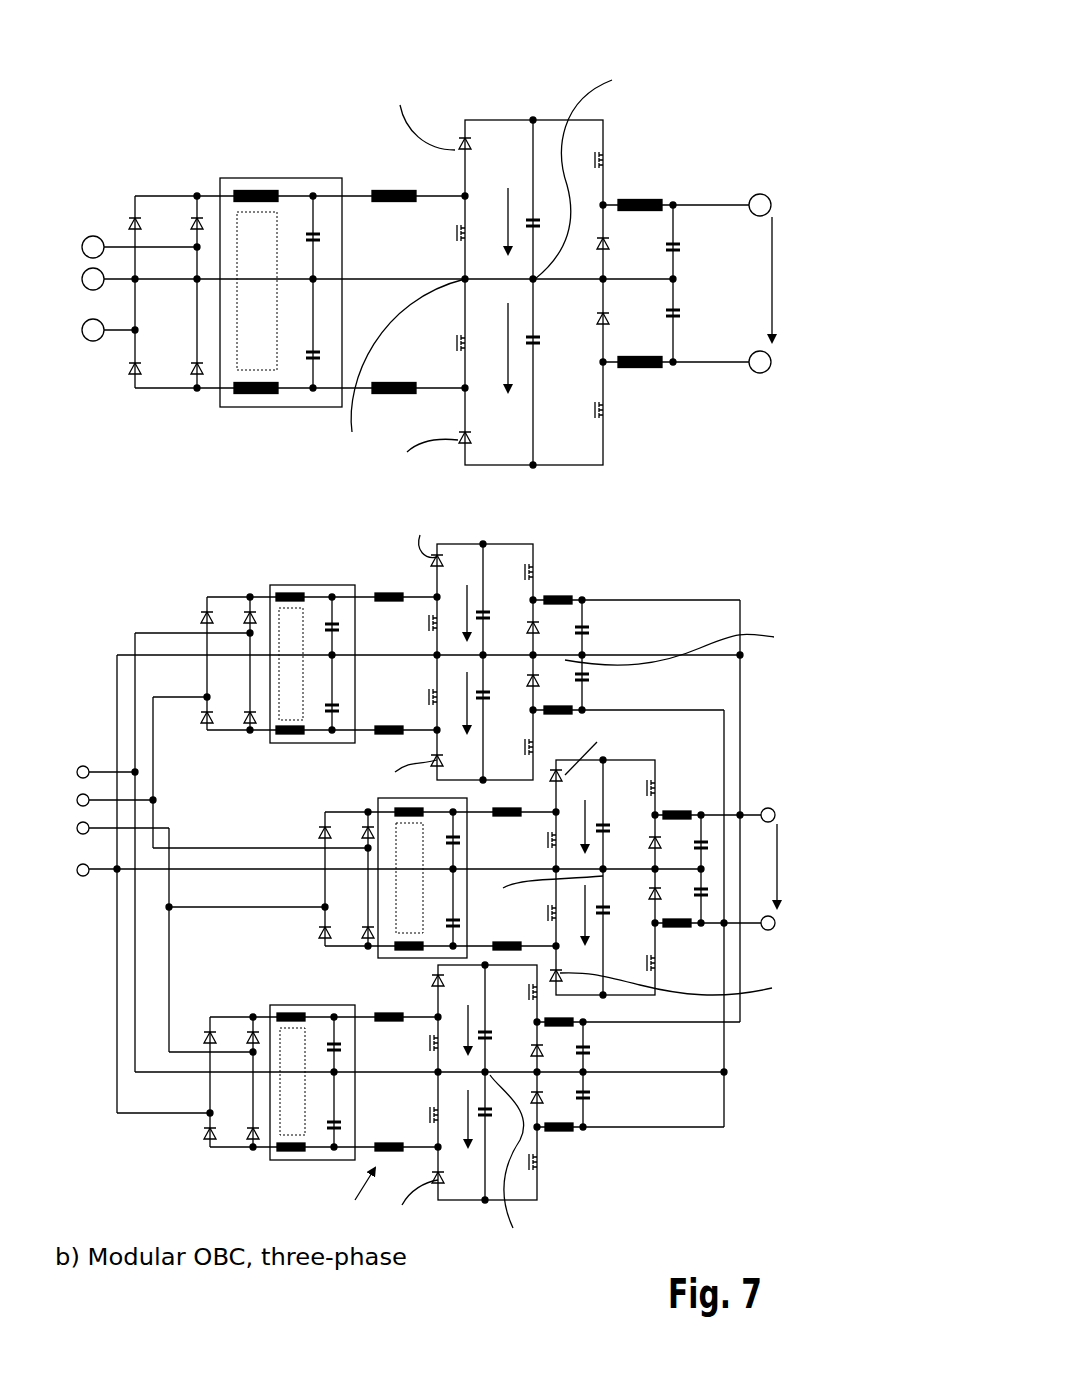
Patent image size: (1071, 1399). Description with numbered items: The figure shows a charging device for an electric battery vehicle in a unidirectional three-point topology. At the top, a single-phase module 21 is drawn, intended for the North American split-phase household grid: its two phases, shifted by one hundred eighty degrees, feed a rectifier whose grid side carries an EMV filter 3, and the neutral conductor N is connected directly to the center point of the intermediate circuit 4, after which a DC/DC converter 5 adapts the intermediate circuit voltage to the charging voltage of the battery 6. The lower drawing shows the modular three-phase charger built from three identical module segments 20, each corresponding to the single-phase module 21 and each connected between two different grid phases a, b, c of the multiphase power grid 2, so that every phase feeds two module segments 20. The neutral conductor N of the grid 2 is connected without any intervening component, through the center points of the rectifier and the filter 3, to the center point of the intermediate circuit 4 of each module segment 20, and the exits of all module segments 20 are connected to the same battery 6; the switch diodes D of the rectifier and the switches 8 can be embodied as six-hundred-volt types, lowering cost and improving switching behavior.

The multiphase power grid 2 is at (85, 905).
The filter 3 is at (268, 557).
The intermediate circuit 4 is at (530, 86).
The DC/DC converter 5 is at (630, 1097).
The battery 6 is at (790, 831).
The switches 8 is at (428, 1045).
The module segment 20 is at (642, 583).
The single-phase module 21 is at (754, 148).